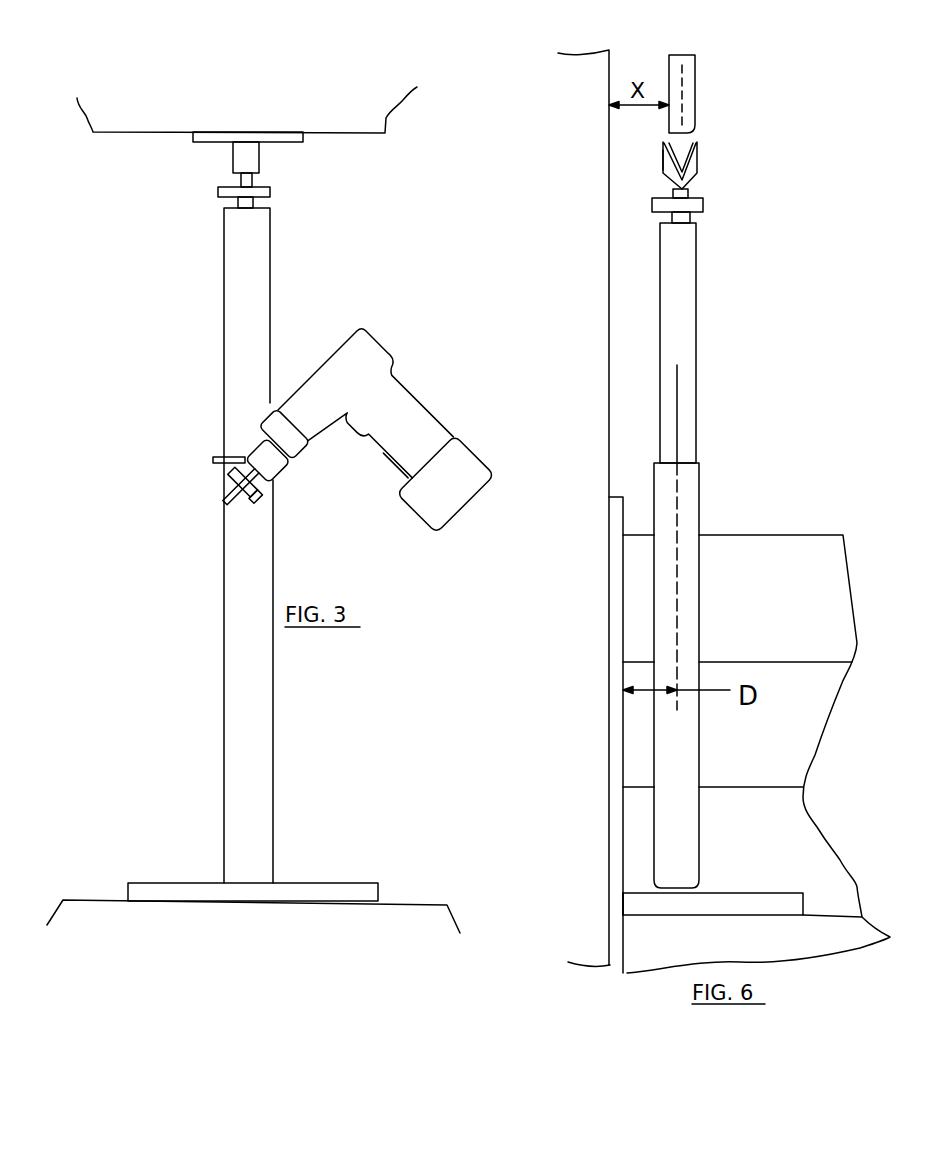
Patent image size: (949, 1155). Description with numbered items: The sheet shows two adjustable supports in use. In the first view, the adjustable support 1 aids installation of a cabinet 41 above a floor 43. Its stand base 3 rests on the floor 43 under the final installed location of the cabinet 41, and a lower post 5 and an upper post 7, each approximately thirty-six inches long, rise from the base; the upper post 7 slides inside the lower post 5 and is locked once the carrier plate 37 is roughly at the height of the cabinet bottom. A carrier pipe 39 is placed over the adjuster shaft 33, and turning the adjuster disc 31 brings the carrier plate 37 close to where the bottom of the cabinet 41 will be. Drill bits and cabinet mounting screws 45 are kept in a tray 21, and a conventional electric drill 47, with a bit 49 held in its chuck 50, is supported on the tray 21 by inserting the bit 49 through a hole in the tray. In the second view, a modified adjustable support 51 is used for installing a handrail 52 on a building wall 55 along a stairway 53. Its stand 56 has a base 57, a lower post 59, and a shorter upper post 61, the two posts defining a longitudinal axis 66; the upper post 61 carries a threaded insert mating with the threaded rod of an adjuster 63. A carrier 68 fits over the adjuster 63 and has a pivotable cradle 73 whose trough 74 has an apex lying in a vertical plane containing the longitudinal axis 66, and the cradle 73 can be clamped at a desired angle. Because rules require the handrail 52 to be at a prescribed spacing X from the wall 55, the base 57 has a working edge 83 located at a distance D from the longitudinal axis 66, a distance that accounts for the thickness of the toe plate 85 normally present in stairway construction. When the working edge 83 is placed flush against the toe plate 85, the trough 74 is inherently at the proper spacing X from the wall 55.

In FIG. 3, the adjustable support 1 is at (253, 516).
In FIG. 3, the stand base 3 is at (298, 890).
In FIG. 3, the lower post 5 is at (247, 655).
In FIG. 3, the upper post 7 is at (245, 290).
In FIG. 3, the tray 21 is at (240, 497).
In FIG. 3, the adjuster disc 31 is at (262, 192).
In FIG. 3, the adjuster shaft 33 is at (250, 180).
In FIG. 3, the carrier plate 37 is at (203, 138).
In FIG. 3, the carrier pipe 39 is at (242, 160).
In FIG. 3, the cabinet 41 is at (363, 112).
In FIG. 3, the floor 43 is at (108, 912).
In FIG. 3, the cabinet mounting screws 45 is at (263, 487).
In FIG. 3, the electric drill 47 is at (453, 493).
In FIG. 3, the bit 49 is at (233, 490).
In FIG. 3, the chuck 50 is at (247, 462).
In FIG. 6, the modified adjustable support 51 is at (707, 271).
In FIG. 6, the handrail 52 is at (695, 80).
In FIG. 6, the stairway 53 is at (760, 562).
In FIG. 6, the building wall 55 is at (610, 258).
In FIG. 6, the stand 56 is at (707, 402).
In FIG. 6, the base 57 is at (728, 903).
In FIG. 6, the lower post 59 is at (688, 618).
In FIG. 6, the upper post 61 is at (685, 333).
In FIG. 6, the adjuster 63 is at (713, 207).
In FIG. 6, the longitudinal axis 66 is at (677, 522).
In FIG. 6, the carrier 68 is at (707, 160).
In FIG. 6, the pivotable cradle 73 is at (653, 165).
In FIG. 6, the trough 74 is at (690, 155).
In FIG. 6, the working edge 83 is at (623, 903).
In FIG. 6, the toe plate 85 is at (613, 597).